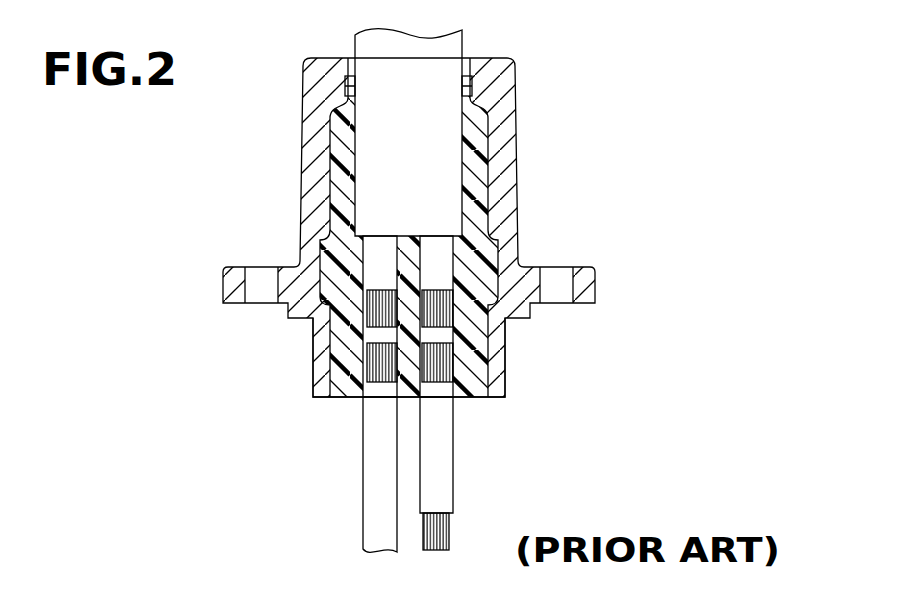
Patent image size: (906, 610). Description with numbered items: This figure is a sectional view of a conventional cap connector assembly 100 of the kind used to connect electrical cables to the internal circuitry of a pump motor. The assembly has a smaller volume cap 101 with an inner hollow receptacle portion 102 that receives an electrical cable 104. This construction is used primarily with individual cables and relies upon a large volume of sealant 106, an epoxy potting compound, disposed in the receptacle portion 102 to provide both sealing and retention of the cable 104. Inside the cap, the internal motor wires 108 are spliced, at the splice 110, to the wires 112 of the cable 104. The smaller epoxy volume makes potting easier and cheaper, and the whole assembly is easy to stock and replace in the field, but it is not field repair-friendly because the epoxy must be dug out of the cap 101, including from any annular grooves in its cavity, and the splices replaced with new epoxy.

The cap connector assembly 100 is at (530, 68).
The cap 101 is at (512, 150).
The inner hollow receptacle portion 102 is at (500, 212).
The electrical cable 104 is at (380, 85).
The sealant 106 is at (482, 357).
The internal motor wires 108 is at (440, 487).
The splice 110 is at (447, 378).
The wires of the cable 112 is at (440, 259).